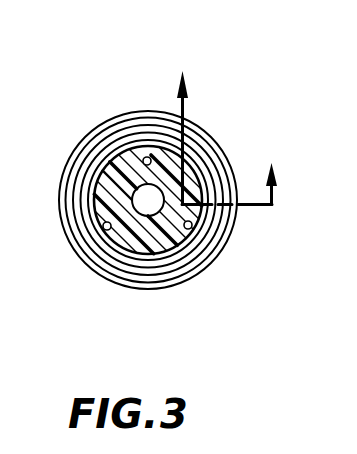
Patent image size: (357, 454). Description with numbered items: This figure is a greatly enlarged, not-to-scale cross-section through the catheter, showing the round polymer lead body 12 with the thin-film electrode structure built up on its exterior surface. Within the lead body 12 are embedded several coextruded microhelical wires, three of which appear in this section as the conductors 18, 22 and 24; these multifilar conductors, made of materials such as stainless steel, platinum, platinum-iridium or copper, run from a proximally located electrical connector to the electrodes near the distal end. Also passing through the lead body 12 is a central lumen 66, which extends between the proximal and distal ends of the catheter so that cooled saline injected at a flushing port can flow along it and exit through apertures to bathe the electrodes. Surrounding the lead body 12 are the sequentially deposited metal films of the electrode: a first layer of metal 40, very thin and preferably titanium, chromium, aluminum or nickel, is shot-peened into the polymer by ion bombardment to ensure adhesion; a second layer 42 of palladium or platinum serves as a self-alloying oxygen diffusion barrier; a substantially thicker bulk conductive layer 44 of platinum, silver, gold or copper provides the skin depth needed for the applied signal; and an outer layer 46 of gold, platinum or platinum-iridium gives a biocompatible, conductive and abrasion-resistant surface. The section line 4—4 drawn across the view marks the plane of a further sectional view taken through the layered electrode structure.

The section line 4- 4 is at (226, 121).
The lead body 12 is at (118, 238).
The microhelical wire 18 is at (143, 161).
The microhelical wire 22 is at (104, 228).
The microhelical wire 24 is at (192, 228).
The first layer of metal 40 is at (184, 246).
The second layer 42 is at (176, 261).
The bulk conductive layer 44 is at (163, 273).
The outer layer 46 is at (115, 276).
The lumen 66 is at (131, 199).